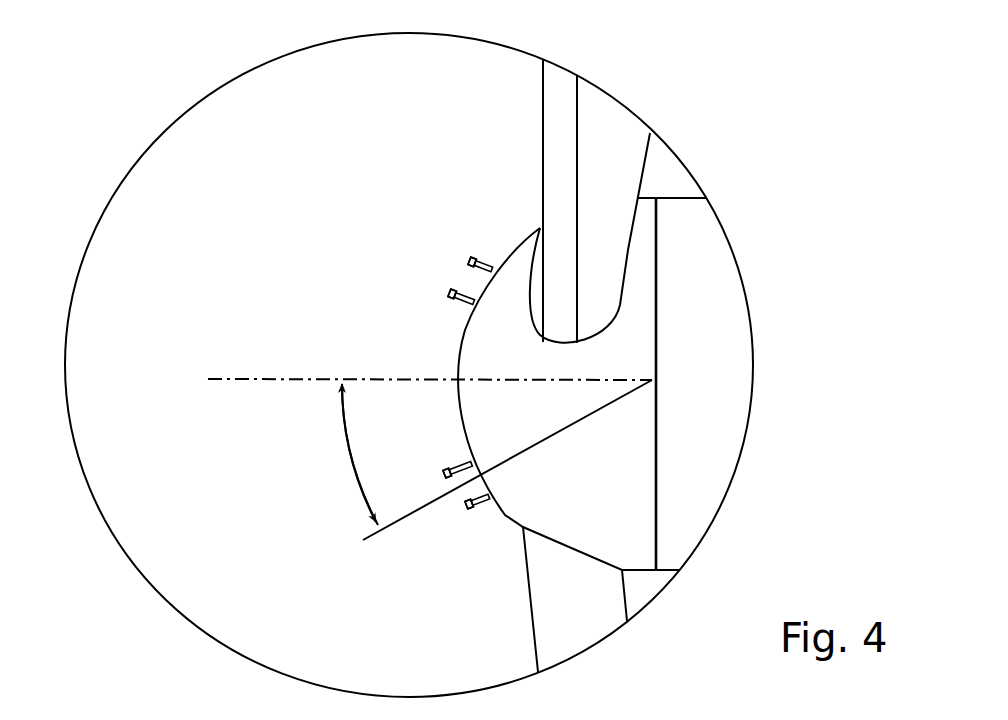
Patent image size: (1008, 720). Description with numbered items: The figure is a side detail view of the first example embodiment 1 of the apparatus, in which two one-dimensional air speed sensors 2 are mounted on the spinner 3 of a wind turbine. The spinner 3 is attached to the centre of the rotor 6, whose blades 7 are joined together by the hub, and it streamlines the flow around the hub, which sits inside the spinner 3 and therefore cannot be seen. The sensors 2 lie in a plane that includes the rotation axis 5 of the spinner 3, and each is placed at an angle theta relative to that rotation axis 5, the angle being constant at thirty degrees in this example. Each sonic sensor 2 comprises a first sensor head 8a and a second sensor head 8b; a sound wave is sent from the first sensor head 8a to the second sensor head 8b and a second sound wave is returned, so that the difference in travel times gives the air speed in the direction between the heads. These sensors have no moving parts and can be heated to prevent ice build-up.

The first example embodiment 1 is at (146, 76).
The one-dimensional air speed sensor 2 is at (445, 270).
The spinner 3 is at (633, 358).
The rotation axis 5 is at (243, 377).
The rotor 6 is at (363, 322).
The blade 7 is at (633, 140).
The first sensor head 8a is at (473, 252).
The second sensor head 8b is at (452, 288).